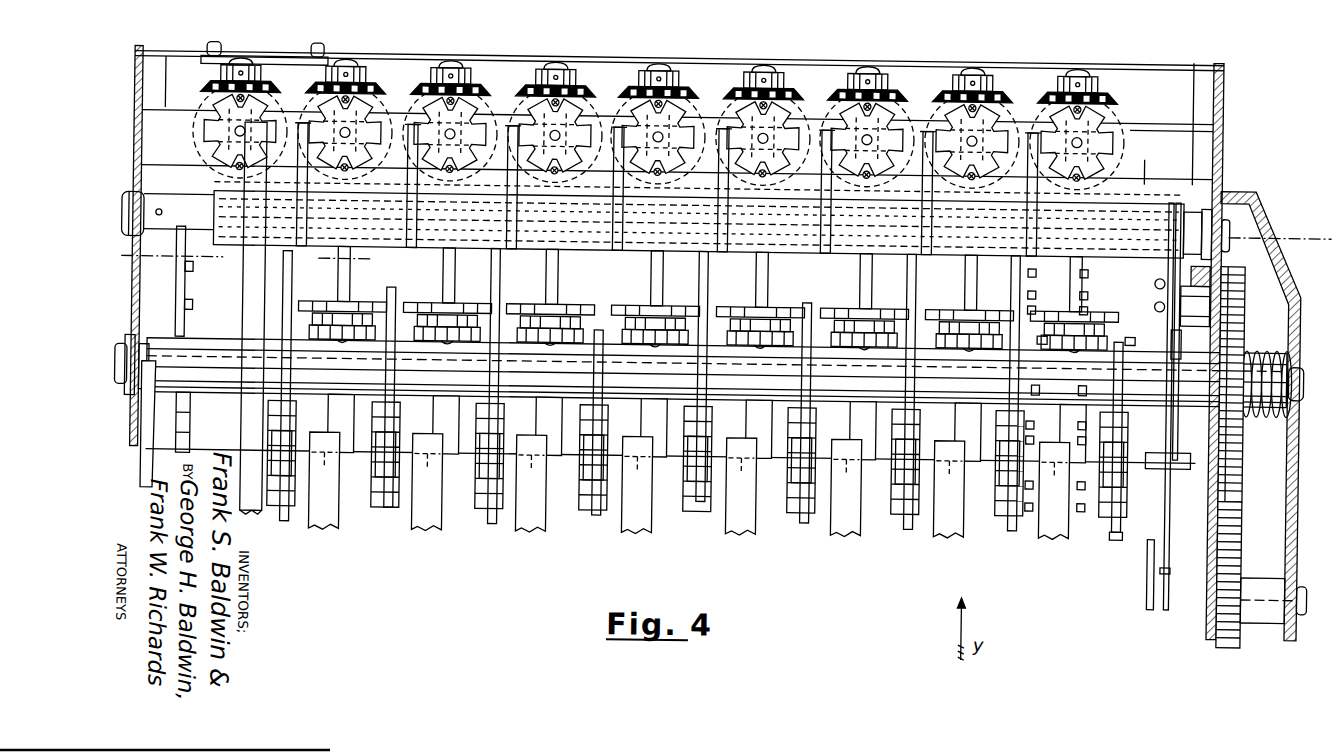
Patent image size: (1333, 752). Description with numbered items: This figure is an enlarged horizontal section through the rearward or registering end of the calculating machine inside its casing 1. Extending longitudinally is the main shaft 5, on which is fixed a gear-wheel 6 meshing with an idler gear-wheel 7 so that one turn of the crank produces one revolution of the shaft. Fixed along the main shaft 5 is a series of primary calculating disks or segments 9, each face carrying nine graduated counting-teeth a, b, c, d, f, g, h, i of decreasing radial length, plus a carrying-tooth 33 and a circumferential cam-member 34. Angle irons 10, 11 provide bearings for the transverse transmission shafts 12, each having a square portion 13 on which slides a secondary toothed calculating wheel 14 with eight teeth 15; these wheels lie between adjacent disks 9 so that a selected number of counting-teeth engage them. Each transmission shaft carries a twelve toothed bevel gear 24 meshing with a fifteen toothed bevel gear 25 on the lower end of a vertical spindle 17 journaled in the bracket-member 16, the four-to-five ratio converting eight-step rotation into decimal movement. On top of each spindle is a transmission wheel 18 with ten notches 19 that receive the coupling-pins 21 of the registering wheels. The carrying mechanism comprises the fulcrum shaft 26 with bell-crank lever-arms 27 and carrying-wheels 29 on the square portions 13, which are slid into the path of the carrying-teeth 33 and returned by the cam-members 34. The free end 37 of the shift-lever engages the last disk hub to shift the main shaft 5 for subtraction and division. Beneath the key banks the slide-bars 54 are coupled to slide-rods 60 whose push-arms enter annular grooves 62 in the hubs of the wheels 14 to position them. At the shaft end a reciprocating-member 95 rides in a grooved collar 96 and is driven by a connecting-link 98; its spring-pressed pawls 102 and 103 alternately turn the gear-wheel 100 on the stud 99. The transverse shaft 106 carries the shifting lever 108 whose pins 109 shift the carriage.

The casing 1 is at (362, 52).
The main shaft 5 is at (160, 257).
The gear-wheel 6 is at (1243, 300).
The idler gear-wheel 7 is at (1243, 530).
The primary calculating disk or segment 9 is at (187, 283).
The angle iron or bracket-member 10 is at (200, 335).
The angle iron or bracket-member 11 is at (172, 30).
The transmission shaft 12 is at (690, 84).
The square portion of transmission shaft 13 is at (332, 273).
The secondary toothed calculating wheel 14 is at (460, 300).
The teeth 15 is at (358, 300).
The bracket-member 16 is at (176, 108).
The vertical spindle 17 is at (235, 131).
The transmission wheel 18 is at (205, 150).
The notches 19 is at (195, 130).
The coupling-pins 21 is at (395, 92).
The twelve toothed bevel gear 24 is at (372, 82).
The fifteen toothed bevel gear 25 is at (470, 98).
The fulcrum shaft 26 is at (185, 200).
The lever-arm 27 is at (290, 97).
The carrying-wheel 29 is at (400, 240).
The carrying-tooth or projection 33 is at (1018, 508).
The cam-member 34 is at (1120, 528).
The free end of shift-lever 37 is at (147, 455).
The slide-bar 54 is at (328, 527).
The slide-rod 60 is at (640, 409).
The annular groove 62 is at (475, 313).
The reciprocating-member 95 is at (1213, 202).
The grooved collar 96 is at (1185, 414).
The connecting-link 98 is at (1152, 590).
The stud 99 is at (1212, 263).
The gear-wheel 100 is at (1200, 290).
The spring-pressed pawl 102 is at (1185, 340).
The spring-pressed pawl 103 is at (1157, 294).
The transverse shaft 106 is at (248, 420).
The shifting lever 108 is at (275, 56).
The pins 109 is at (213, 42).
The counting-tooth or projection a is at (1060, 381).
The counting-tooth or projection b is at (1061, 419).
The counting-tooth or projection c is at (1083, 337).
The counting-tooth or projection d is at (1060, 440).
The counting-tooth or projection f is at (1054, 479).
The counting-tooth or projection g is at (1063, 291).
The counting-tooth or projection h is at (1055, 508).
The counting-tooth or projection i is at (1063, 265).
The part l is at (1061, 306).